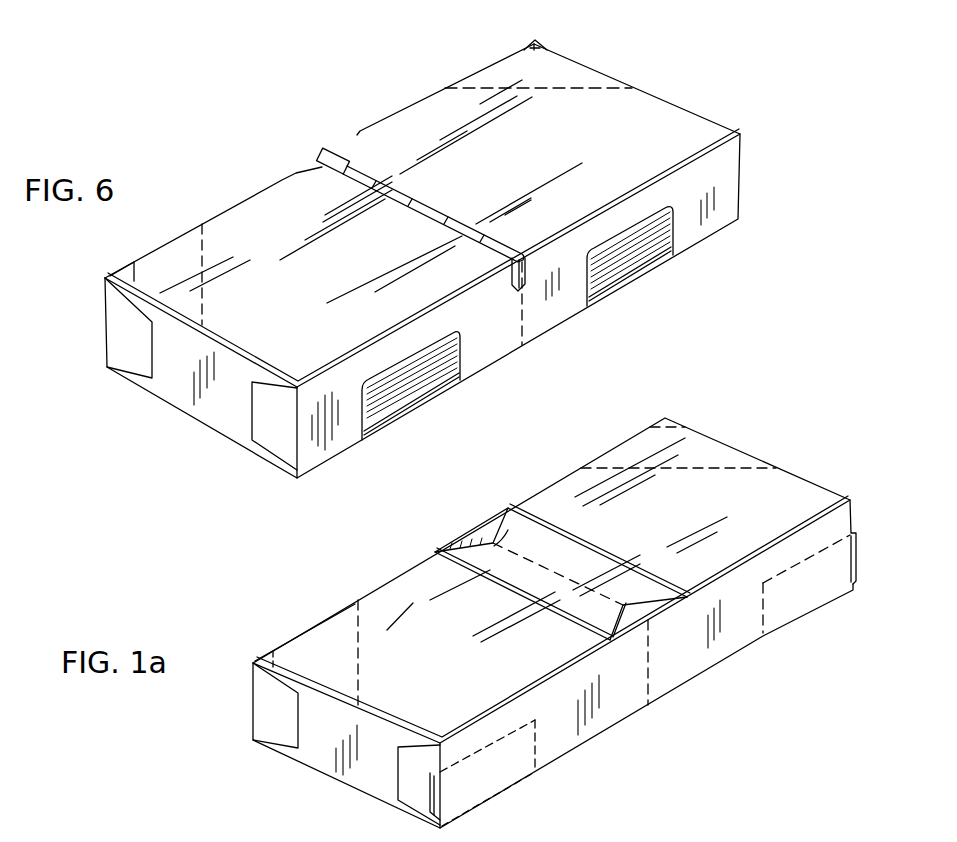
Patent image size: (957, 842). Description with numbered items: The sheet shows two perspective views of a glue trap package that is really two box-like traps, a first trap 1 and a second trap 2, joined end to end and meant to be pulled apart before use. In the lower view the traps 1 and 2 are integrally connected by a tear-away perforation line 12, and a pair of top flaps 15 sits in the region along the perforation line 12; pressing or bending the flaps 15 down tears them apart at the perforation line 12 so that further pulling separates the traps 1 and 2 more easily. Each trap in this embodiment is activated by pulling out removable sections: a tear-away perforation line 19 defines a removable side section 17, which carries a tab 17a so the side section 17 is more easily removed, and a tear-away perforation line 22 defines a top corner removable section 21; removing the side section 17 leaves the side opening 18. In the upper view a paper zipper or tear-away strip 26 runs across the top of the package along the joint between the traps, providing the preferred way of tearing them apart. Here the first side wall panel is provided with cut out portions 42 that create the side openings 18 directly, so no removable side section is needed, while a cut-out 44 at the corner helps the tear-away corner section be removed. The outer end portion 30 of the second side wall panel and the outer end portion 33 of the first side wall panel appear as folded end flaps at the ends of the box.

In FIG. 1a, the first trap 1 is at (396, 565).
In FIG. 1a, the second trap 2 is at (586, 454).
In FIG. 6, the tear-away perforation line 12 is at (523, 330).
In FIG. 1a, the tear-away perforation line 12 is at (650, 683).
In FIG. 1a, the top flaps 15 is at (490, 526).
In FIG. 1a, the removable side section 17 is at (497, 775).
In FIG. 1a, the tab 17a is at (428, 792).
In FIG. 6, the side opening 18 is at (616, 268).
In FIG. 1a, the tear-away perforation line 19 is at (540, 752).
In FIG. 1a, the top corner removable section 21 is at (300, 648).
In FIG. 1a, the tear-away perforation line 22 is at (357, 626).
In FIG. 6, the paper zipper or tear-away strip 26 is at (334, 152).
In FIG. 6, the outer end portion 30 is at (126, 356).
In FIG. 6, the outer end portion 33 is at (272, 440).
In FIG. 6, the cut out portions 42 is at (652, 270).
In FIG. 6, the cut-out 44 is at (545, 45).